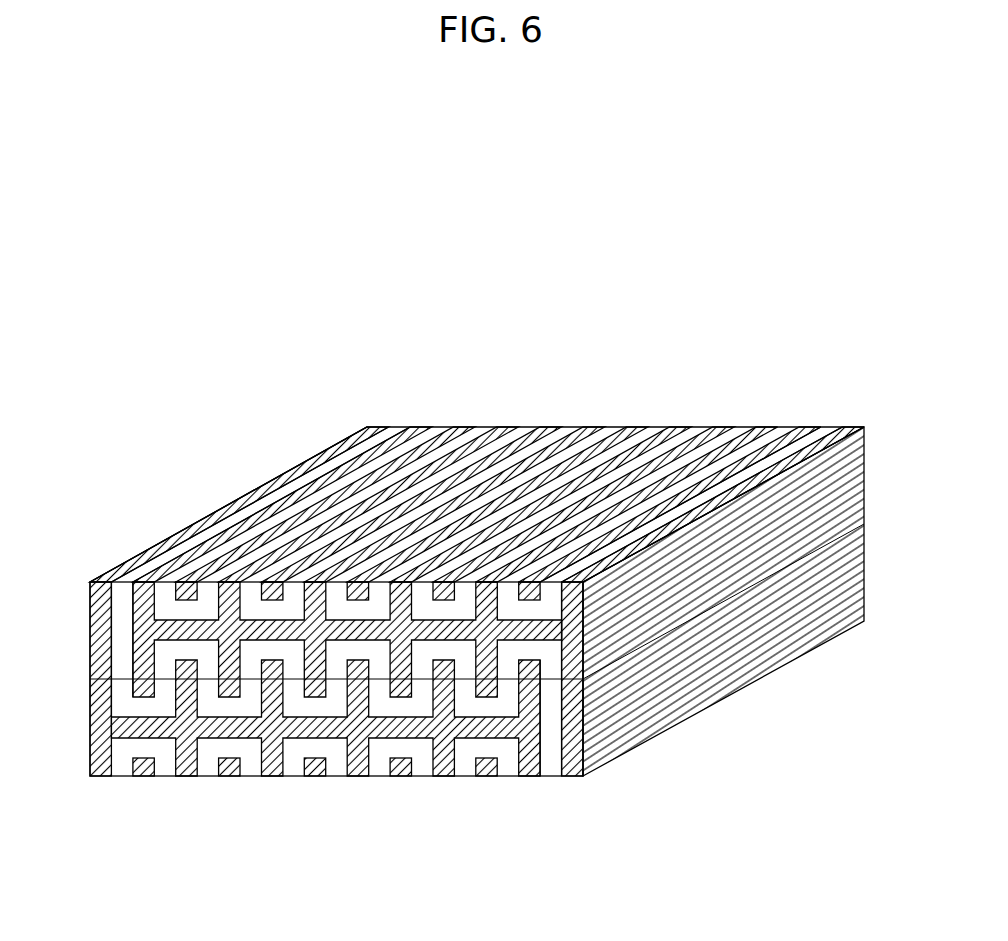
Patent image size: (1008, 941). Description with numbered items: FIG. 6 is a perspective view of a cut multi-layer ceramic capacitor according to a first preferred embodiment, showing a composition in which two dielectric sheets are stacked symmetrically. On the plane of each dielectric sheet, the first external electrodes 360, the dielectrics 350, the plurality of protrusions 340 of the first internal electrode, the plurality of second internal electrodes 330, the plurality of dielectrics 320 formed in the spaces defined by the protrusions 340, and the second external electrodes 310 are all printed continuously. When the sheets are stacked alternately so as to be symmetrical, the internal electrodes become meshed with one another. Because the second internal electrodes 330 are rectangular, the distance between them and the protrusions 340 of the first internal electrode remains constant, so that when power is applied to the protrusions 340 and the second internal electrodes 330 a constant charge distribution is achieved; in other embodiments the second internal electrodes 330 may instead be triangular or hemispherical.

The second external electrode 310 is at (848, 426).
The dielectric 320 is at (823, 426).
The second internal electrode 330 is at (803, 426).
The protrusion of the first internal electrode 340 is at (757, 426).
The dielectric 350 is at (395, 427).
The first external electrode 360 is at (283, 477).